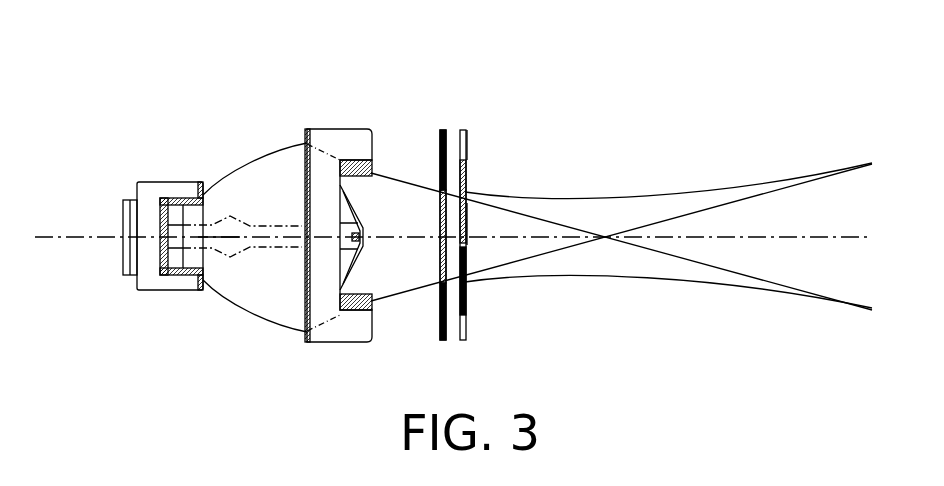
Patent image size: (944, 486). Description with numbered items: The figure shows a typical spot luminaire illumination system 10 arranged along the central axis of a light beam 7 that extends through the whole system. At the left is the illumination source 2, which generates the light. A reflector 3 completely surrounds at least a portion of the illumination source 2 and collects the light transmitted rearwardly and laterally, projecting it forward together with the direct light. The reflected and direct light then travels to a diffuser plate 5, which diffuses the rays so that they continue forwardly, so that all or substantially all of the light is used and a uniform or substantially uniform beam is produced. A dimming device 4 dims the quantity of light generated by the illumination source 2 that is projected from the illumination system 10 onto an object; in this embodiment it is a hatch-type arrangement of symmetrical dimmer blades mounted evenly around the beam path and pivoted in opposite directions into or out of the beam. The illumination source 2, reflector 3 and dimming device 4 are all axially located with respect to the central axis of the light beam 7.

The illumination system 10 is at (207, 49).
The illumination source 2 is at (237, 253).
The reflector 3 is at (258, 162).
The dimming device 4 is at (466, 333).
The diffuser plate 5 is at (442, 130).
The light beam 7 is at (650, 268).